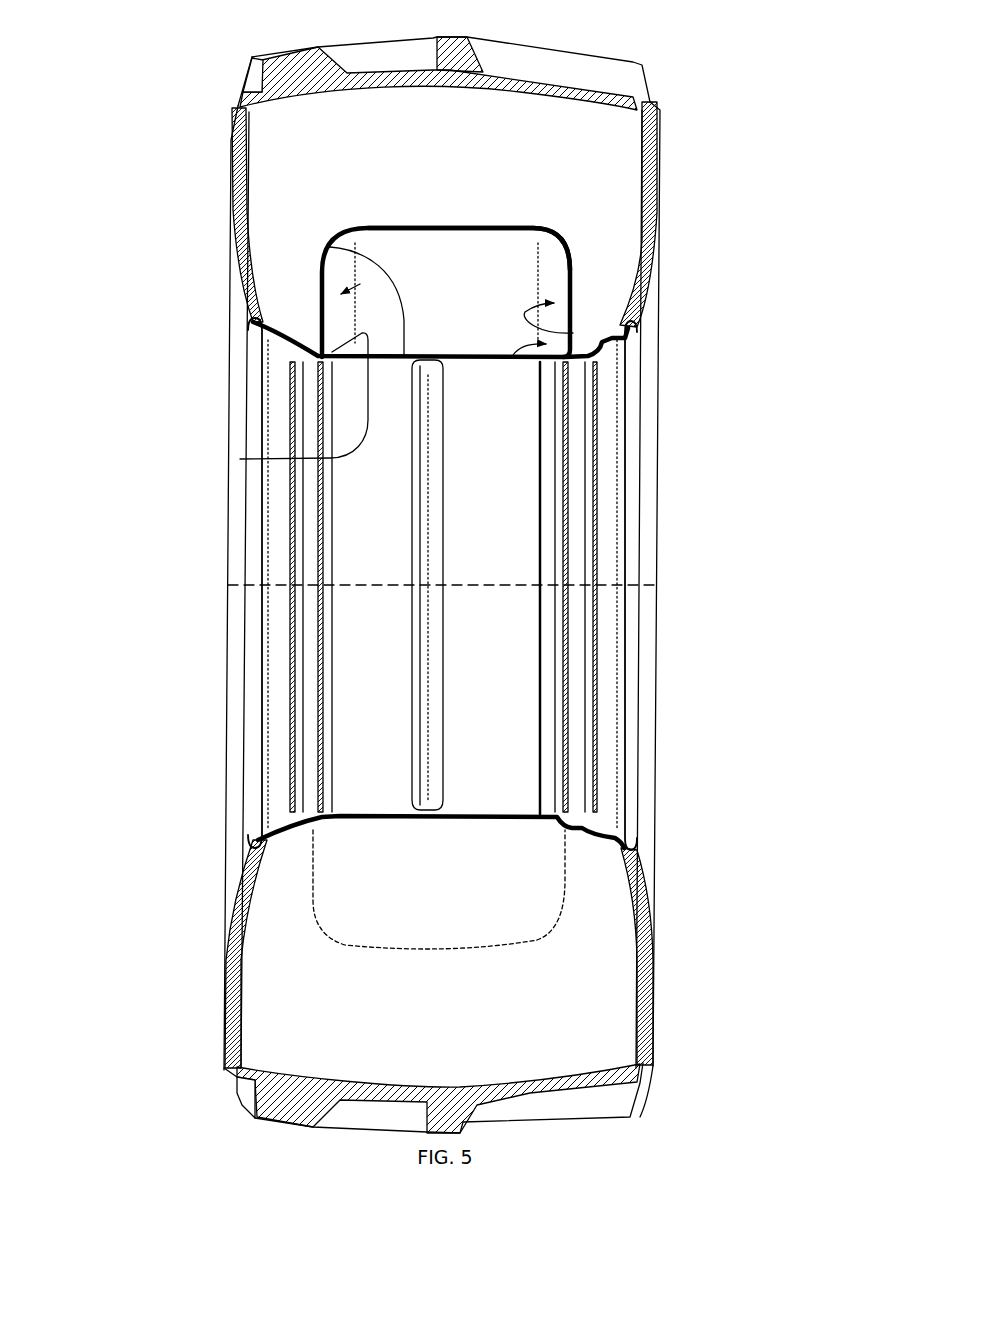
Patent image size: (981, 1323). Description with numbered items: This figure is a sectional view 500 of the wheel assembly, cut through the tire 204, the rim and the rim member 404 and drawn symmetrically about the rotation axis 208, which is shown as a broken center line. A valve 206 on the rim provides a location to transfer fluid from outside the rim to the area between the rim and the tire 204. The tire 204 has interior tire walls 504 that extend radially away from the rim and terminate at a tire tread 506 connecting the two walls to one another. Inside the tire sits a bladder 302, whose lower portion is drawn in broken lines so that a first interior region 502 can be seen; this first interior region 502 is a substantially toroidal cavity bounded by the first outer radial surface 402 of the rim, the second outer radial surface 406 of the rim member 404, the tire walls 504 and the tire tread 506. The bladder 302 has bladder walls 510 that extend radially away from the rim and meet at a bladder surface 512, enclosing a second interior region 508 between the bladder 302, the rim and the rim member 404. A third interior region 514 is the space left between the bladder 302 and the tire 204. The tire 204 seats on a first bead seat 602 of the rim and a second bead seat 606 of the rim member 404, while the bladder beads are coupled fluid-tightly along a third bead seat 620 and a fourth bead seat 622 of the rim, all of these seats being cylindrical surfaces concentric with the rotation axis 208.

The sectional view 500 is at (98, 166).
The tire 204 is at (652, 103).
The third interior region 514 is at (434, 160).
The bladder surface 512 is at (448, 208).
The bladder 302 is at (576, 229).
The second interior region 508 is at (436, 308).
The fourth bead seat 622 is at (502, 357).
The first outer radial surface 402 is at (330, 246).
The bladder walls 510 is at (322, 282).
The first bead seat 602 is at (252, 309).
The second bead seat 606 is at (608, 324).
The valve 206 is at (570, 813).
The third bead seat 620 is at (240, 459).
The rotation axis 208 is at (483, 586).
The second outer radial surface 406 is at (585, 830).
The rim member 404 is at (633, 830).
The tire walls 504 is at (252, 936).
The first interior region 502 is at (448, 997).
The tire tread 506 is at (470, 1111).